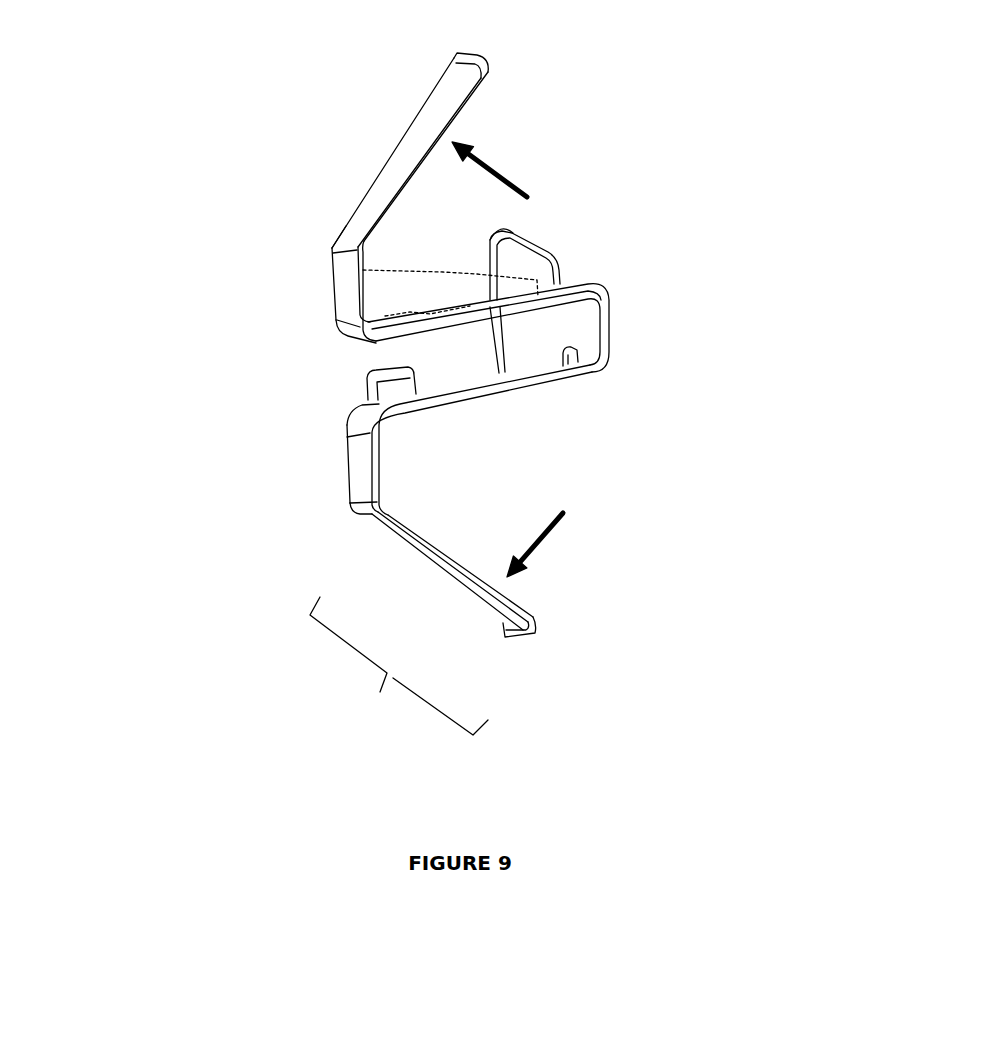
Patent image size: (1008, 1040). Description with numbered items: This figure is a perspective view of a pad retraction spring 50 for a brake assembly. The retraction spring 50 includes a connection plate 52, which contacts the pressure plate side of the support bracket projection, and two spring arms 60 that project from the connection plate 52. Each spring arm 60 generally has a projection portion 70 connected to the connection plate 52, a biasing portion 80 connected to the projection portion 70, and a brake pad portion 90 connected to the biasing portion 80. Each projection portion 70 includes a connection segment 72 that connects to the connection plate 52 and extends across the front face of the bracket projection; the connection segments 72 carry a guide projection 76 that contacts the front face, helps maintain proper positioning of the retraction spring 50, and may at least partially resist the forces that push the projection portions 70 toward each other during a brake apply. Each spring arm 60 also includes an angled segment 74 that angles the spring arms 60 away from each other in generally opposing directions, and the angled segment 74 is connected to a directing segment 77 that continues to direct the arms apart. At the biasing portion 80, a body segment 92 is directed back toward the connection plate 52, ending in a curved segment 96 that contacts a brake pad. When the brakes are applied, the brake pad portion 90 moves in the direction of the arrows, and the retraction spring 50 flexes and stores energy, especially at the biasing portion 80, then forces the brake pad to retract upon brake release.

The retraction spring 50 is at (807, 207).
The connection plate 52 is at (512, 260).
The spring arm 60 is at (279, 441).
The projection portion 70 is at (449, 270).
The connection segment 72 is at (473, 323).
The angled segment 74 is at (357, 417).
The guide projection 76 is at (390, 380).
The directing segment 77 is at (343, 280).
The biasing portion 80 is at (338, 236).
The brake pad portion 90 is at (399, 668).
The body segment 92 is at (425, 146).
The curved segment 96 is at (490, 68).